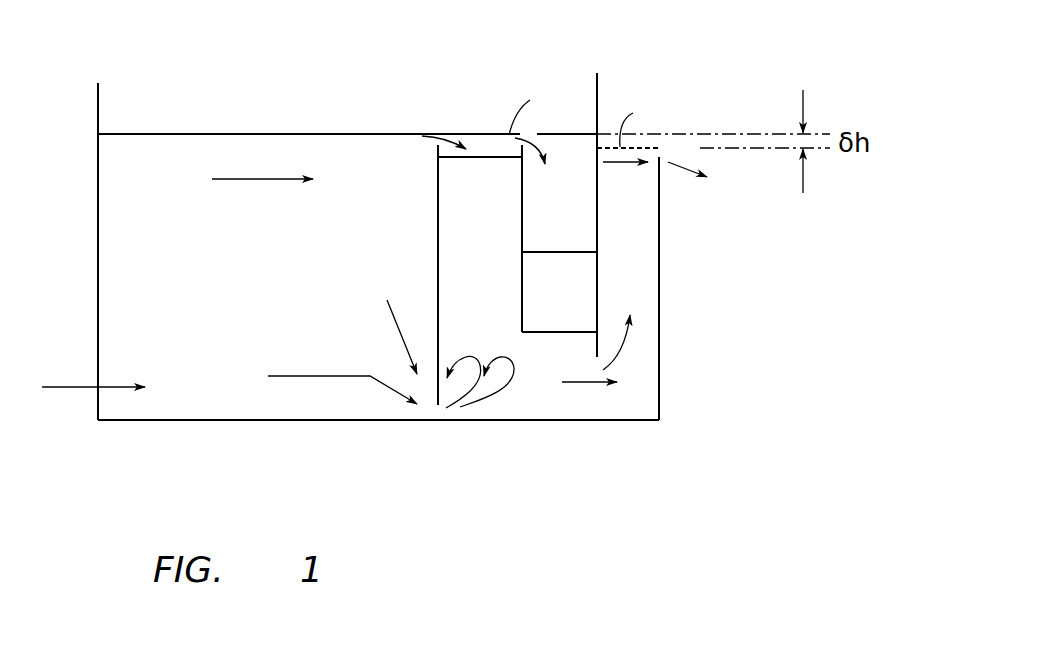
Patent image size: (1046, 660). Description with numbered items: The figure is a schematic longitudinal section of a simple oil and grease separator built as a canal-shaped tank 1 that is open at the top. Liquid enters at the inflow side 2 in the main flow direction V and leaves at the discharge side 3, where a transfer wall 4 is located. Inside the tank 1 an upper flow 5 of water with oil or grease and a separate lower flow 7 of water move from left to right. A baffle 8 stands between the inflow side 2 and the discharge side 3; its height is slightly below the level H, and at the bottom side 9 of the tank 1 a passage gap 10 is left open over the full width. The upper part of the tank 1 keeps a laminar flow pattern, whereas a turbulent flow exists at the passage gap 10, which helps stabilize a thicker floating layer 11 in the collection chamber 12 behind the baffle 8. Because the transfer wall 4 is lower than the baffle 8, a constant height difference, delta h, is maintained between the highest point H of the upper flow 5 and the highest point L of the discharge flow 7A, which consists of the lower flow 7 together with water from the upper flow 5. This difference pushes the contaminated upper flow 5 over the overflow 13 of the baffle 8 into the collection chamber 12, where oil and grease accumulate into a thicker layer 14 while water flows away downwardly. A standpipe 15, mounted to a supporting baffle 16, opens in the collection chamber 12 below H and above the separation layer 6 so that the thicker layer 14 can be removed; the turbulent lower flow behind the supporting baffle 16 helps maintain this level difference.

The tank 1 is at (256, 280).
The inflow side 2 is at (98, 352).
The discharge side 3 is at (660, 335).
The transfer wall 4 is at (660, 150).
The upper flow 5 is at (200, 132).
The separation layer 6 is at (437, 162).
The lower flow 7 is at (127, 210).
The discharge flow 7A is at (622, 235).
The baffle 8 is at (437, 272).
The bottom side 9 is at (267, 420).
The passage gap 10 is at (447, 413).
The floating layer 11 is at (478, 148).
The collection chamber 12 is at (488, 286).
The overflow 13 is at (437, 145).
The thicker layer 14 is at (502, 150).
The standpipe 15 is at (523, 157).
The supporting baffle 16 is at (598, 78).